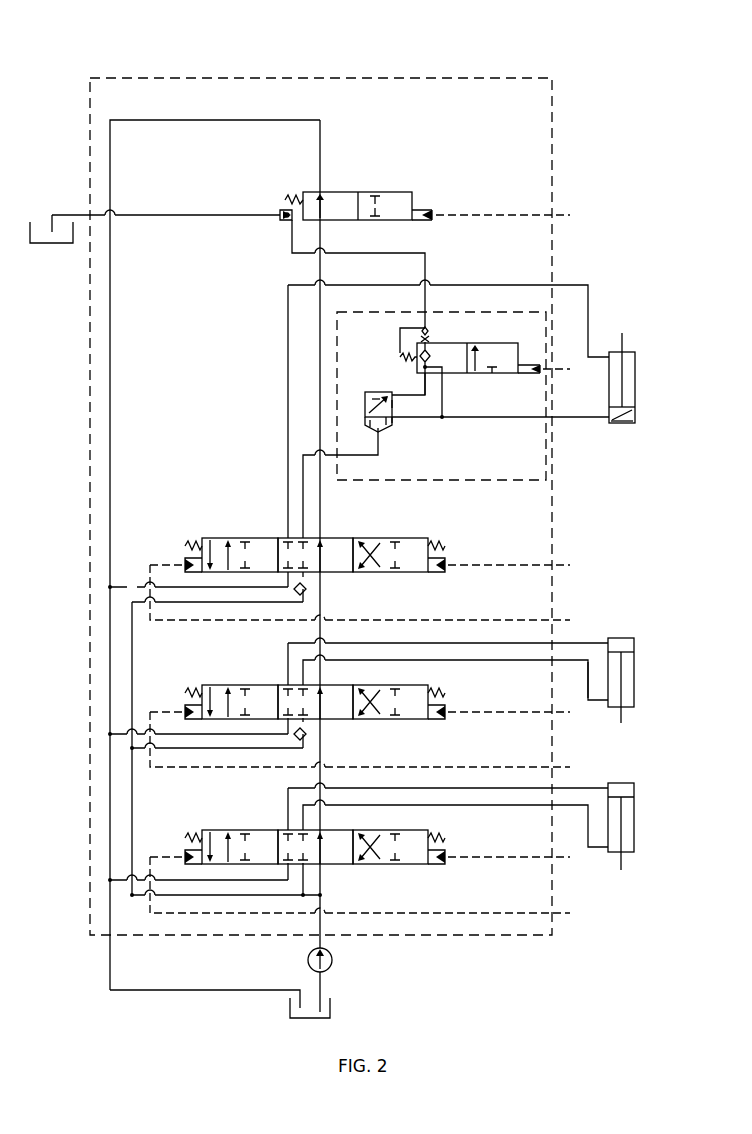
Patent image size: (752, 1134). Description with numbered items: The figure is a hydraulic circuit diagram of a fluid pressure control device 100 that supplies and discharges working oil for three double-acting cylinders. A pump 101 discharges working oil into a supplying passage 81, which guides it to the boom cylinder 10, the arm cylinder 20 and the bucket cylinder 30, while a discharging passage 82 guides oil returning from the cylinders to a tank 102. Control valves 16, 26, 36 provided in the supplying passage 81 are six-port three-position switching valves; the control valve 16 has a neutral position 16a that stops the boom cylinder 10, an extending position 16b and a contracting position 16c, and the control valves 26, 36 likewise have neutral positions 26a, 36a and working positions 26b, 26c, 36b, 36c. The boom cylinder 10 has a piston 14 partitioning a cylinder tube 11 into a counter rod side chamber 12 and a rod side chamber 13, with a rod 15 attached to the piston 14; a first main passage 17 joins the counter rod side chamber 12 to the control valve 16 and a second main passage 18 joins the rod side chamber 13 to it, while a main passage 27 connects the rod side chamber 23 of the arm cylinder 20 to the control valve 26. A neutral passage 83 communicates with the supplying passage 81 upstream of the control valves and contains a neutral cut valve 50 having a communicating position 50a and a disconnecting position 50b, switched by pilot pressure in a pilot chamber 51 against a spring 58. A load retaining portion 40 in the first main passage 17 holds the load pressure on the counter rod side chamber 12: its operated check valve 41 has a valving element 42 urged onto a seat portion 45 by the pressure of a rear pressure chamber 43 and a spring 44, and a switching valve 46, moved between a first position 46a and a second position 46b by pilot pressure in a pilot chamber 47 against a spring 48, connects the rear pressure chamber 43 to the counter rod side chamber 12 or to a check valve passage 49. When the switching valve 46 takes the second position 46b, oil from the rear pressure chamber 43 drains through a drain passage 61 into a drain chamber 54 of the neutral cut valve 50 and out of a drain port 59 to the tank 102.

The fluid pressure control device 100 is at (186, 77).
The boom cylinder 10 is at (642, 383).
The cylinder tube 11 is at (636, 372).
The counter rod side chamber 12 is at (634, 417).
The rod side chamber 13 is at (627, 376).
The piston 14 is at (612, 419).
The rod 15 is at (632, 405).
The control valve 16 is at (360, 553).
The neutral position 16a is at (316, 544).
The extending position 16b is at (241, 544).
The contracting position 16c is at (399, 544).
The first main passage 17 is at (303, 468).
The second main passage 18 is at (286, 362).
The arm cylinder 20 is at (643, 657).
The rod side chamber 23 is at (628, 672).
The control valve 26 is at (360, 705).
The neutral position 26a is at (316, 691).
The extending position 26b is at (241, 691).
The contracting position 26c is at (399, 691).
The main passage 27 is at (566, 662).
The bucket cylinder 30 is at (635, 782).
The control valve 36 is at (360, 851).
The neutral position 36a is at (316, 836).
The extending position 36b is at (241, 836).
The contracting position 36c is at (399, 836).
The load retaining portion 40 is at (452, 416).
The operated check valve 41 is at (387, 400).
The valving element 42 is at (390, 421).
The rear pressure chamber 43 is at (392, 404).
The spring 44 is at (392, 396).
The seat portion 45 is at (375, 428).
The switching valve 46 is at (493, 368).
The first position 46a is at (444, 369).
The second position 46b is at (494, 347).
The pilot chamber 47 is at (520, 368).
The spring 48 is at (400, 360).
The check valve passage 49 is at (428, 330).
The neutral cut valve 50 is at (401, 329).
The communicating position 50a is at (337, 194).
The disconnecting position 50b is at (391, 193).
The pilot chamber 51 is at (420, 210).
The drain chamber 54 is at (282, 211).
The spring 58 is at (296, 195).
The drain port 59 is at (283, 222).
The drain passage 61 is at (292, 240).
The supplying passage 81 is at (193, 603).
The discharging passage 82 is at (110, 922).
The neutral passage 83 is at (323, 150).
The pump 101 is at (333, 962).
The tank 102 is at (290, 1012).